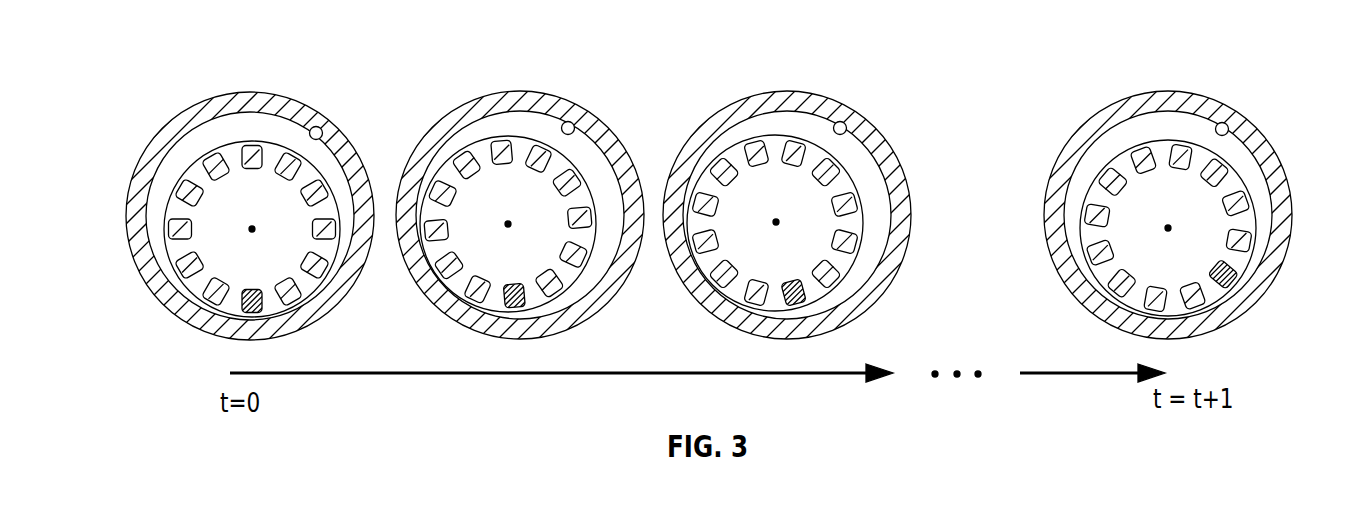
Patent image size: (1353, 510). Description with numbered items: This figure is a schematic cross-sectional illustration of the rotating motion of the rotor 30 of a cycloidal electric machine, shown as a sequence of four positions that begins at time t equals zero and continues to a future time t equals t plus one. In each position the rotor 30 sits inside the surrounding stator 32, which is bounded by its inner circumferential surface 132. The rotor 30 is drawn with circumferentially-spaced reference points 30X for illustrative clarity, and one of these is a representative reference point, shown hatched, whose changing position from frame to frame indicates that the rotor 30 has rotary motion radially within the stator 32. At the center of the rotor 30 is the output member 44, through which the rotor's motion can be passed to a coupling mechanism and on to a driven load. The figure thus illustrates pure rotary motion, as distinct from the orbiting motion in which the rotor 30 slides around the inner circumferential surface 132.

The stator 32 is at (251, 100).
The inner circumferential surface 132 is at (318, 126).
The rotor 30 is at (264, 212).
The reference points 30X is at (185, 195).
The output member 44 is at (252, 233).